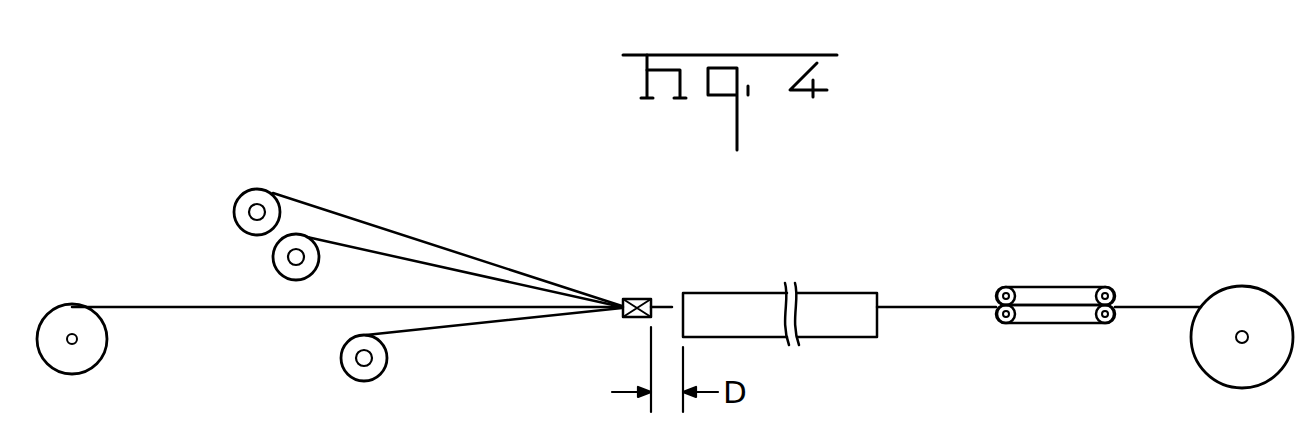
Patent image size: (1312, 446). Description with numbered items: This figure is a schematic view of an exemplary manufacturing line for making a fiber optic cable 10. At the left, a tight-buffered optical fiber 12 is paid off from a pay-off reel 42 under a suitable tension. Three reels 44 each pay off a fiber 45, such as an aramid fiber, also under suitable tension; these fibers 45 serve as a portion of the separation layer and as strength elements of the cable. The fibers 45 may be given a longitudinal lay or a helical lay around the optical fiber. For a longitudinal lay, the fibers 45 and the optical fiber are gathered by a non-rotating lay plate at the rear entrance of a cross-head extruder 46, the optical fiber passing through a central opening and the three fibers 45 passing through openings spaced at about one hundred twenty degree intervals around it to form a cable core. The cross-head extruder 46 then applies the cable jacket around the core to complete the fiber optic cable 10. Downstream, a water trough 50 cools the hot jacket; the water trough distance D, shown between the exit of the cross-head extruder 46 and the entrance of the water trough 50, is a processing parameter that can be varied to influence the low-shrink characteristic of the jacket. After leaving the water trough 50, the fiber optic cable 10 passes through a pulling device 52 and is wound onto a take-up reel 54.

The fiber optic cable 10 is at (672, 303).
The tight-buffered optical fiber 12 is at (158, 307).
The pay-off reel 42 is at (66, 312).
The reels 44 is at (256, 193).
The fibers 45 is at (403, 257).
The cross-head extruder 46 is at (633, 299).
The water trough 50 is at (818, 300).
The pulling device 52 is at (1044, 288).
The take-up reel 54 is at (1258, 288).